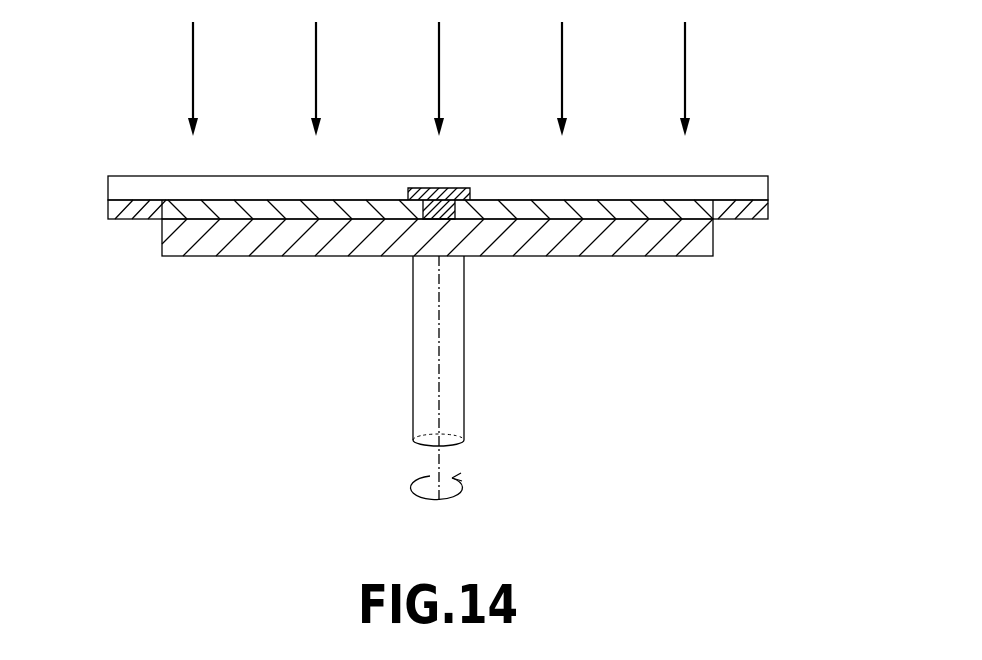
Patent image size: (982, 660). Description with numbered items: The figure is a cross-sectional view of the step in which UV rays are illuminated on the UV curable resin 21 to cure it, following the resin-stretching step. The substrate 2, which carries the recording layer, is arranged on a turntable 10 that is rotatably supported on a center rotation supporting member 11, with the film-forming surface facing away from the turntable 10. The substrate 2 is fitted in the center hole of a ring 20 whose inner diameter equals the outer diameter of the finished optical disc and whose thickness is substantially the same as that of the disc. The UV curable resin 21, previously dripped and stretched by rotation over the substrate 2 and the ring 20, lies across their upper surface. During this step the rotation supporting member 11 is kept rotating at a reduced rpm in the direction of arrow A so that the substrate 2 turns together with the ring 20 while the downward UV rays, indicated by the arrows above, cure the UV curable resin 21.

The substrate 2 is at (203, 211).
The turntable 10 is at (665, 246).
The center rotation supporting member 11 is at (455, 357).
The ring 20 is at (760, 212).
The UV curable resin 21 is at (757, 191).